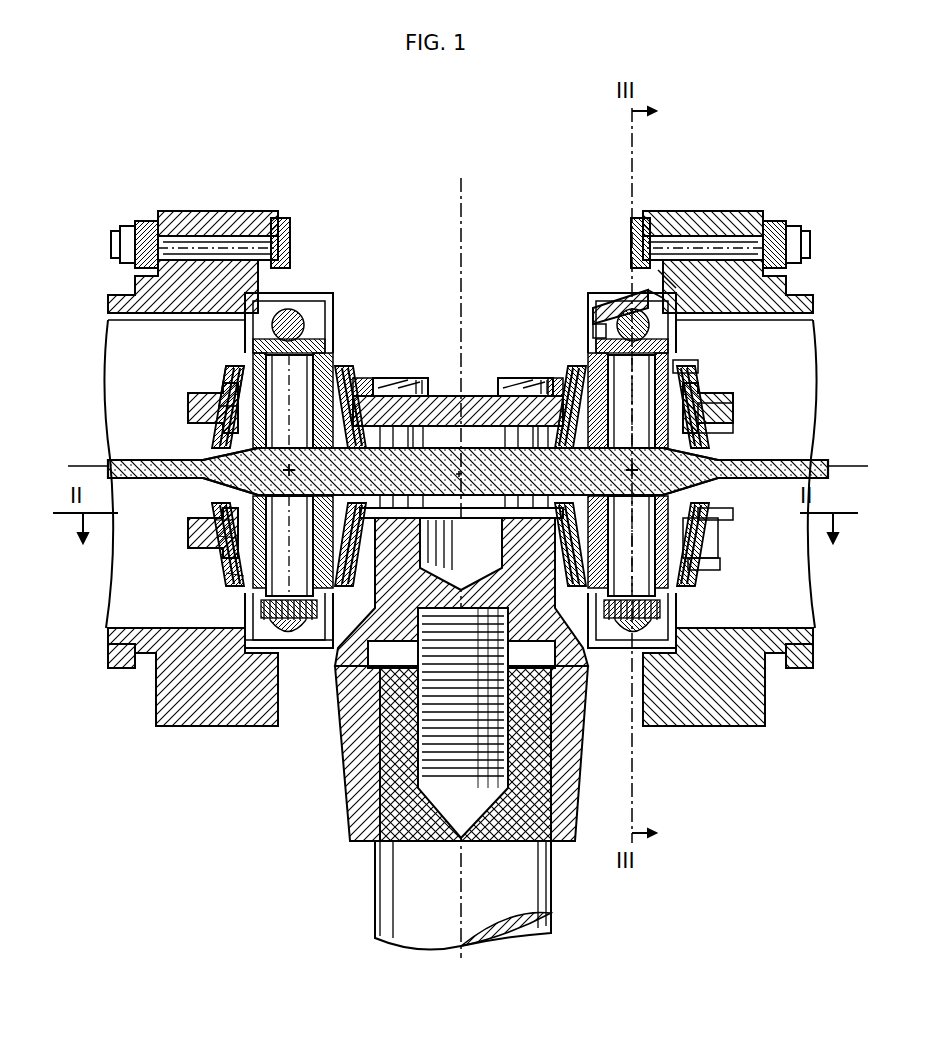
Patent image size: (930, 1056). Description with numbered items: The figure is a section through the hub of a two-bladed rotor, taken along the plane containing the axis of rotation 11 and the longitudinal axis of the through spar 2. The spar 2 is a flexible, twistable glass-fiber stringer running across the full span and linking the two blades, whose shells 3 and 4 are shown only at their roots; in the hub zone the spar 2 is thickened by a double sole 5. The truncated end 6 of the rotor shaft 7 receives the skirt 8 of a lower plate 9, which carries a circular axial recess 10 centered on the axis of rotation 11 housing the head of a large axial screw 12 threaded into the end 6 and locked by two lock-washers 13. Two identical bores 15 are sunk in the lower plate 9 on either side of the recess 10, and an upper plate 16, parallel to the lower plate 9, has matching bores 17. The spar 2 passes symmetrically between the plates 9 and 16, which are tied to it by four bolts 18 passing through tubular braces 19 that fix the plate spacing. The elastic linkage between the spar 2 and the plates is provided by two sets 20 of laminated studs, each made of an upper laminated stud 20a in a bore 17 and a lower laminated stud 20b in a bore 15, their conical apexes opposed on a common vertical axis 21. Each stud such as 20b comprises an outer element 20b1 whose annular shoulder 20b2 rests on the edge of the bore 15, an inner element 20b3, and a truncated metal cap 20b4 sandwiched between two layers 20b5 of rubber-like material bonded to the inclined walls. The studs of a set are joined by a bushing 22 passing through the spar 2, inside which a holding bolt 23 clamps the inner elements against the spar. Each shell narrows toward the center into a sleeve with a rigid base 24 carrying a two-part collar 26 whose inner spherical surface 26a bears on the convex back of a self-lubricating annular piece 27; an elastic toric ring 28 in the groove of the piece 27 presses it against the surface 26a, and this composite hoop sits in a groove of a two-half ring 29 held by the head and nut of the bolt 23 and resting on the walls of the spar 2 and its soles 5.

The spar 2 is at (760, 455).
The shell 3 is at (766, 660).
The shell 4 is at (112, 660).
The double sole 5 is at (700, 456).
The truncated end 6 is at (380, 778).
The rotor shaft 7 is at (385, 886).
The skirt 8 is at (345, 740).
The lower plate 9 is at (722, 520).
The circular axial recess 10 is at (375, 545).
The axis of rotation 11 is at (455, 185).
The axial screw 12 is at (480, 620).
The lock-washer 13 is at (715, 505).
The bore 15 is at (705, 556).
The upper plate 16 is at (712, 415).
The bore 17 is at (200, 388).
The bolt 18 is at (380, 378).
The tubular brace 19 is at (470, 418).
The set of laminated studs 20 is at (338, 352).
The upper laminated stud 20a is at (232, 360).
The lower laminated stud 20b is at (672, 578).
The outer element 20b1 is at (232, 545).
The annular shoulder 20b2 is at (185, 524).
The inner element 20b3 is at (246, 612).
The truncated metal cap 20b4 is at (240, 565).
The layer of supple material 20b5 is at (210, 498).
The vertical axis 21 is at (268, 722).
The bushing 22 is at (670, 360).
The holding bolt 23 is at (290, 416).
The rigid base 24 is at (214, 712).
The collar 26 is at (604, 292).
The inner spherical surface 26a is at (588, 320).
The annular piece 27 is at (666, 281).
The elastic toric ring 28 is at (655, 330).
The ring 29 is at (660, 307).